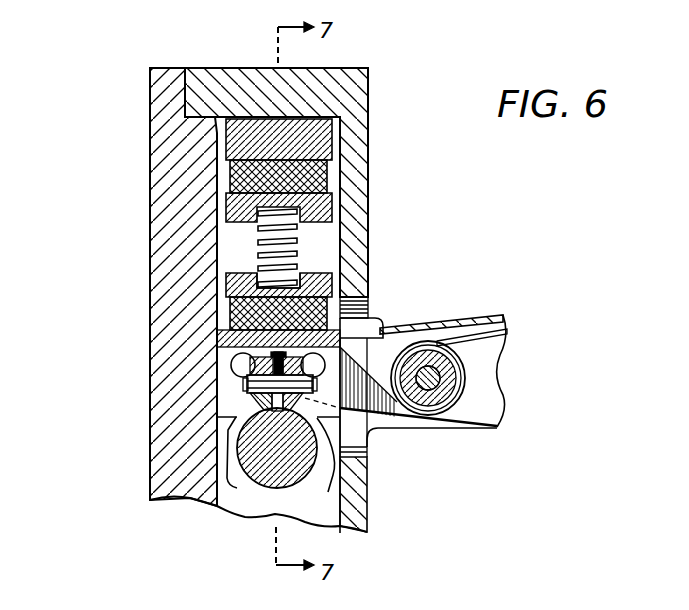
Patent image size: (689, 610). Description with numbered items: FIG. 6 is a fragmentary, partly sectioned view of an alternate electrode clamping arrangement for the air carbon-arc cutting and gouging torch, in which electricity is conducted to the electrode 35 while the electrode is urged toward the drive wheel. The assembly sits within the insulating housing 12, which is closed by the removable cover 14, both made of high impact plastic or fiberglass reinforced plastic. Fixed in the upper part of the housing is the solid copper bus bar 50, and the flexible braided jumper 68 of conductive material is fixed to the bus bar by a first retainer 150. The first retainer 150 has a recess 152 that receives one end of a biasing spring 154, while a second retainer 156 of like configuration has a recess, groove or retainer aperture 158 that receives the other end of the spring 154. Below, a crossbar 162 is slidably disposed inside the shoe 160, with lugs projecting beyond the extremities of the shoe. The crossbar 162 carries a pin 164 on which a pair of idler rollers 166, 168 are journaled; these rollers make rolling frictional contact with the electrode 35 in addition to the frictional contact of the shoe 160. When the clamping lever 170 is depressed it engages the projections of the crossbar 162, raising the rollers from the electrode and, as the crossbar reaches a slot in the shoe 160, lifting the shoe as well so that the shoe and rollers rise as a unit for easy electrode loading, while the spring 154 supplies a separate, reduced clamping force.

The housing 12 is at (337, 69).
The removable cover 14 is at (154, 92).
The electrode 35 is at (292, 480).
The bus bar 50 is at (332, 140).
The braided jumper 68 is at (327, 178).
The first retainer 150 is at (332, 216).
The recess 152 is at (300, 232).
The spring 154 is at (297, 252).
The second retainer 156 is at (230, 293).
The retainer aperture 158 is at (257, 273).
The shoe 160 is at (231, 363).
The crossbar 162 is at (253, 478).
The pin 164 is at (313, 383).
The idler roller 166 is at (247, 384).
The idler roller 168 is at (368, 472).
The clamping lever 170 is at (457, 329).